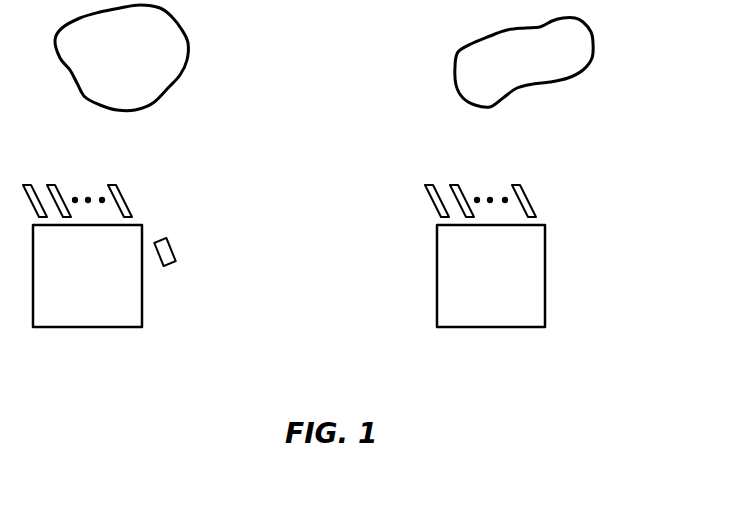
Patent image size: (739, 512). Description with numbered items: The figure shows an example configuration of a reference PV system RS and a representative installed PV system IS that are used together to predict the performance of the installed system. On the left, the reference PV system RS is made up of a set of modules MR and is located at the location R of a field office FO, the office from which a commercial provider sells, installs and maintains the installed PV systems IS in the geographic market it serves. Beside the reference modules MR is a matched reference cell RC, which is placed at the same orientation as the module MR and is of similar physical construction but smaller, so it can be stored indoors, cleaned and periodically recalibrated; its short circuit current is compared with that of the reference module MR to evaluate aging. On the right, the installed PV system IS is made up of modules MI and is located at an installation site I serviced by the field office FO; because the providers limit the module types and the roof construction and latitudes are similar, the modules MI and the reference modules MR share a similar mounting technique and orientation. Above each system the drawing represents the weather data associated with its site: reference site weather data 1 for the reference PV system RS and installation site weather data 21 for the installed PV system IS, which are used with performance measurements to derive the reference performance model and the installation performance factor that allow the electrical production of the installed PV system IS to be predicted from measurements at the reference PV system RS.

The reference site weather data 1 is at (189, 42).
The installation site weather data 21 is at (593, 42).
The module of reference PV system MR is at (40, 186).
The reference PV system RS is at (107, 175).
The reference cell RC is at (173, 245).
The field office FO is at (142, 308).
The location of the field office R is at (112, 292).
The module of installed PV system MI is at (440, 188).
The installed PV system IS is at (506, 175).
The installation site I is at (478, 327).